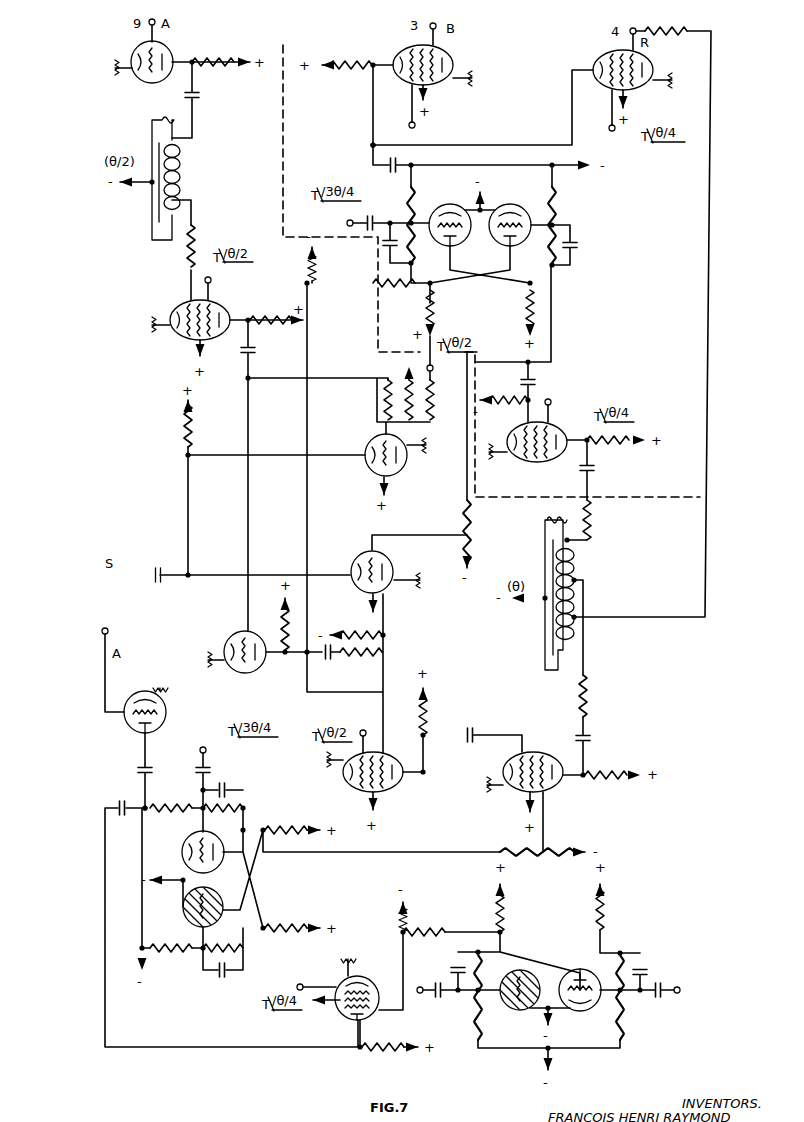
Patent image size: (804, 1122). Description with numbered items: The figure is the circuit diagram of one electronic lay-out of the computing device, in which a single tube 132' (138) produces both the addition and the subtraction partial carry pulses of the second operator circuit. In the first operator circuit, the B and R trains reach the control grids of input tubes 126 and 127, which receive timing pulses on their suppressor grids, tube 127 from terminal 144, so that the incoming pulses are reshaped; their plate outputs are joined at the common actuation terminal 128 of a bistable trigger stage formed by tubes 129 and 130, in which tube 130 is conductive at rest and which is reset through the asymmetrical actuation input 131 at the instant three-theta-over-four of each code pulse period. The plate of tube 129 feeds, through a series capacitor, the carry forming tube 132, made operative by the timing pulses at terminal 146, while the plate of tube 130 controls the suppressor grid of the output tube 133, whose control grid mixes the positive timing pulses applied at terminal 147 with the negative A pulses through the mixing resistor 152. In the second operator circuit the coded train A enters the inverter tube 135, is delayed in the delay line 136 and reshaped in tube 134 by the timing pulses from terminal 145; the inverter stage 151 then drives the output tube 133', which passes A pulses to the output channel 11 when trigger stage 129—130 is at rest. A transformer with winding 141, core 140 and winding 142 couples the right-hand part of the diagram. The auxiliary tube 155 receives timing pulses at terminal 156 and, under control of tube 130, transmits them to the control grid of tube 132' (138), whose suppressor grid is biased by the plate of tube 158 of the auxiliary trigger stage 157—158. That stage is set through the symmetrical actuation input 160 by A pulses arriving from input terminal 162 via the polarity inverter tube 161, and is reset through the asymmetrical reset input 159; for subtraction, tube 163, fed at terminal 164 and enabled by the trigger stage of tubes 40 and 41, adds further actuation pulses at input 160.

The inverter tube 135 is at (145, 72).
The delay line 136 is at (183, 177).
The terminal 145 is at (211, 280).
The reshaping tube 134 is at (185, 342).
The input tube 126 is at (438, 87).
The common actuation terminal 128 is at (372, 146).
The asymmetrical actuation input 131 is at (347, 224).
The trigger stage tube 129 is at (460, 200).
The trigger stage tube 130 is at (513, 206).
The input tube 127 is at (640, 89).
The terminal 144 is at (609, 138).
The terminal 147 is at (433, 368).
The mixing resistor 152 is at (409, 409).
The output tube 133 is at (396, 465).
The terminal 146 is at (551, 400).
The carry forming tube 132 is at (529, 450).
The primary winding 141 is at (594, 538).
The transformer 140 is at (545, 565).
The secondary winding 142 is at (588, 590).
The output tube 133' is at (394, 570).
The output channel 11 is at (164, 582).
The input terminal 162 is at (108, 630).
The polarity inverter tube 161 is at (165, 708).
The inverter stage 151 is at (258, 670).
The asymmetrical reset input 159 is at (206, 750).
The symmetrical actuation input 160 is at (148, 806).
The terminal 156 is at (366, 731).
The auxiliary tube 155 is at (356, 794).
The auxiliary trigger stage tube 157 is at (195, 844).
The auxiliary trigger stage tube 158 is at (188, 910).
The terminal 164 is at (296, 987).
The tube 163 is at (339, 1014).
The trigger stage tube 41 is at (523, 1015).
The trigger stage tube 40 is at (578, 1015).
The carry-forming tube 132' is at (561, 785).
The carry-forming tube 138 is at (561, 785).